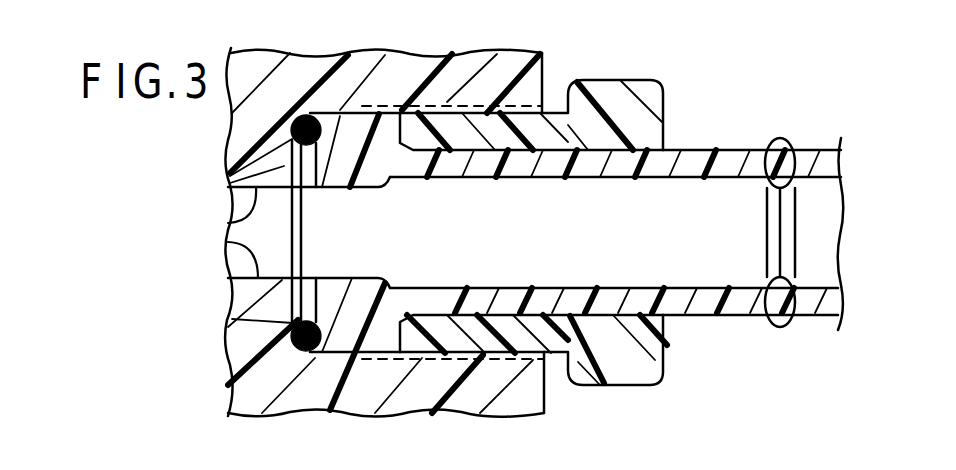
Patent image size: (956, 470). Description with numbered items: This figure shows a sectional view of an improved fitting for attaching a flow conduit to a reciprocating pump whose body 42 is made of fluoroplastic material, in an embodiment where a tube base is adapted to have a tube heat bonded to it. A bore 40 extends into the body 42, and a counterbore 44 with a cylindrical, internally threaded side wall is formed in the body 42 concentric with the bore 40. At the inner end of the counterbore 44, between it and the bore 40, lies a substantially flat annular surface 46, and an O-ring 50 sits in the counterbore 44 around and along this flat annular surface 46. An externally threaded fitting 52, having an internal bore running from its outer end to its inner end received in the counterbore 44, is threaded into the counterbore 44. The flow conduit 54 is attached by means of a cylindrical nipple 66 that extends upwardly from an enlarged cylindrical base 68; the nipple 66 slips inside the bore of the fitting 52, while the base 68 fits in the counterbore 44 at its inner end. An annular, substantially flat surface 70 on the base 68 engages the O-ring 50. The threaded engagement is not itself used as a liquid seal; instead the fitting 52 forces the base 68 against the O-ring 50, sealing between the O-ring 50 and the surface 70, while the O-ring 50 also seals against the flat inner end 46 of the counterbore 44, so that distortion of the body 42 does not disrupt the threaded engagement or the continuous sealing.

The bore 40 is at (228, 230).
The body 42 is at (290, 83).
The counterbore 44 is at (340, 105).
The flat annular surface 46 is at (229, 185).
The O-ring 50 is at (236, 153).
The fitting 52 is at (592, 132).
The flow conduit 54 is at (823, 150).
The cylindrical nipple 66 is at (698, 152).
The cylindrical base 68 is at (370, 162).
The flat surface 70 is at (323, 194).